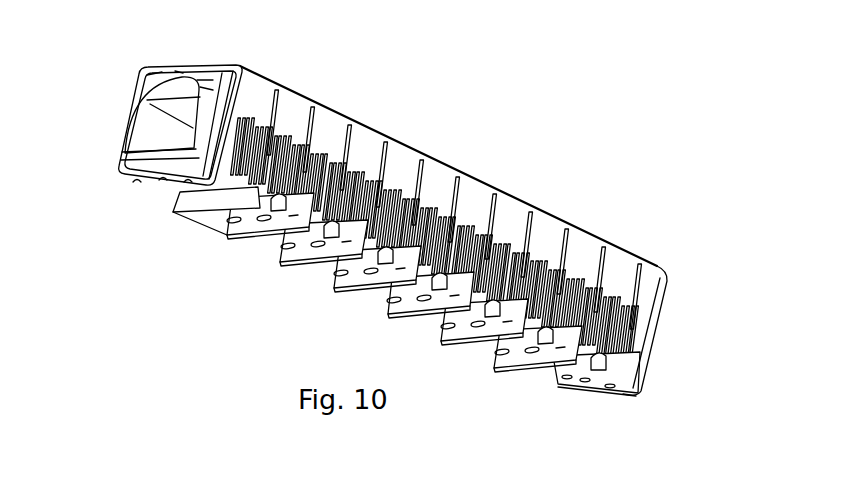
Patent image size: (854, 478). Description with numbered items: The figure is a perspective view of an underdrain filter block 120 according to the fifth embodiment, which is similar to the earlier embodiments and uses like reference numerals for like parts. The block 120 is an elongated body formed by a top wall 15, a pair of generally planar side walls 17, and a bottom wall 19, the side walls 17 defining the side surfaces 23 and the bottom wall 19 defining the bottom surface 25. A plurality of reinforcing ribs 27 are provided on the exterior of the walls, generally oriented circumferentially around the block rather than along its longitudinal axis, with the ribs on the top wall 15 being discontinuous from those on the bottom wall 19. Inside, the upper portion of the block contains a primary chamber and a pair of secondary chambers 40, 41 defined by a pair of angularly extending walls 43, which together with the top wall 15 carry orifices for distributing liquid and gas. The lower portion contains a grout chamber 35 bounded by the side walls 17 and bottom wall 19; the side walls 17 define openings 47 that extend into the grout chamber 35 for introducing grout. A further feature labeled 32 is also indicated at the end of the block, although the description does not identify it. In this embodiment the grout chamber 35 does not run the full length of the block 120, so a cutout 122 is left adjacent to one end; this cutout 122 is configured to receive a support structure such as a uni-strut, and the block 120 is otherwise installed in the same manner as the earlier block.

The underdrain filter block 120 is at (72, 88).
The secondary chamber 40 is at (147, 85).
The secondary chamber 41 is at (203, 88).
The opening 32 is at (140, 135).
The grout chamber 35 is at (117, 163).
The cutout 122 is at (203, 191).
The top wall 15 is at (323, 107).
The side walls 17 is at (430, 177).
The side surfaces 23 is at (533, 228).
The reinforcing ribs 27 is at (470, 312).
The angularly extending walls 43 is at (286, 248).
The openings 47 is at (603, 362).
The bottom wall 19 is at (404, 303).
The bottom surface 25 is at (513, 357).